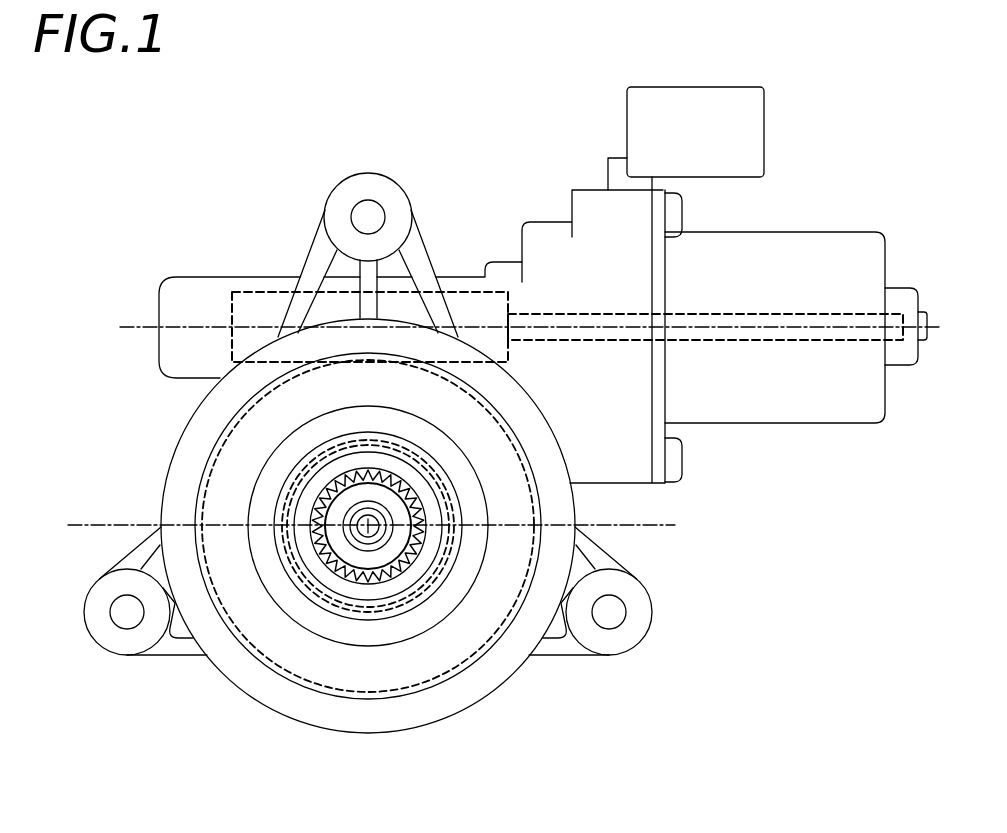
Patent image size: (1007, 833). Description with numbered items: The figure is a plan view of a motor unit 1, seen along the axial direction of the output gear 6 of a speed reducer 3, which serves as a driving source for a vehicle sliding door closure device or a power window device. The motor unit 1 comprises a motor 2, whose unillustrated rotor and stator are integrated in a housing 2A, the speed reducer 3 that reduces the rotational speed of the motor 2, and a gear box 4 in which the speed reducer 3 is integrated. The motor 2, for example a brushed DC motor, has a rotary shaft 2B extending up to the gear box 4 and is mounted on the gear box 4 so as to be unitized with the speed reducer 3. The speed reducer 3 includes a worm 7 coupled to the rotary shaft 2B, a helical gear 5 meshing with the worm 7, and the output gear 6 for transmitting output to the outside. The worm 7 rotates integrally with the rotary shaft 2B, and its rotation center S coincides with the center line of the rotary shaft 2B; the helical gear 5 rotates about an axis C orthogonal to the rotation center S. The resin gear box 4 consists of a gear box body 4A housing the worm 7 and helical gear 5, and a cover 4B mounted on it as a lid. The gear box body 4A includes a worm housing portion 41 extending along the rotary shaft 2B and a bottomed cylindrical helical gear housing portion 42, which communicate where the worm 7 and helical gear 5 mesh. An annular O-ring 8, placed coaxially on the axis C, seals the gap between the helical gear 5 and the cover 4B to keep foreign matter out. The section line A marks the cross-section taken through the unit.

The motor unit 1 is at (504, 428).
The motor 2 is at (717, 340).
The housing 2A is at (745, 425).
The rotary shaft 2B is at (778, 313).
The speed reducer 3 is at (434, 285).
The gear box 4 is at (368, 421).
The gear box body 4A is at (493, 232).
The cover 4B is at (349, 551).
The worm housing portion 41 is at (267, 310).
The helical gear housing portion 42 is at (215, 667).
The helical gear 5 is at (443, 675).
The output gear 6 is at (338, 578).
The worm 7 is at (232, 307).
The O-ring 8 is at (367, 615).
The axis C is at (345, 518).
The rotation center S is at (103, 327).
The section line A is at (76, 530).